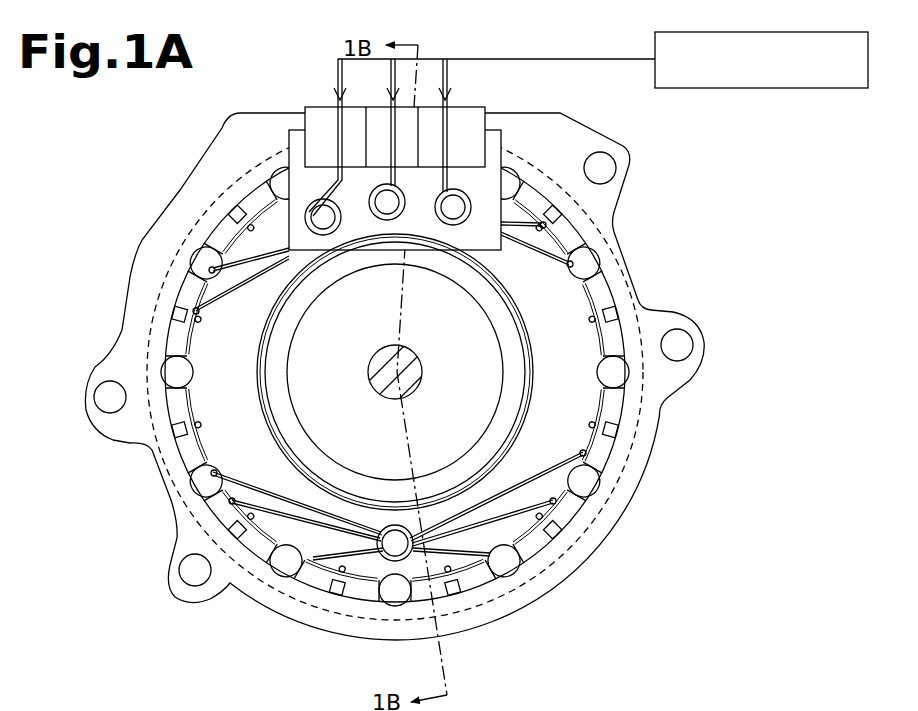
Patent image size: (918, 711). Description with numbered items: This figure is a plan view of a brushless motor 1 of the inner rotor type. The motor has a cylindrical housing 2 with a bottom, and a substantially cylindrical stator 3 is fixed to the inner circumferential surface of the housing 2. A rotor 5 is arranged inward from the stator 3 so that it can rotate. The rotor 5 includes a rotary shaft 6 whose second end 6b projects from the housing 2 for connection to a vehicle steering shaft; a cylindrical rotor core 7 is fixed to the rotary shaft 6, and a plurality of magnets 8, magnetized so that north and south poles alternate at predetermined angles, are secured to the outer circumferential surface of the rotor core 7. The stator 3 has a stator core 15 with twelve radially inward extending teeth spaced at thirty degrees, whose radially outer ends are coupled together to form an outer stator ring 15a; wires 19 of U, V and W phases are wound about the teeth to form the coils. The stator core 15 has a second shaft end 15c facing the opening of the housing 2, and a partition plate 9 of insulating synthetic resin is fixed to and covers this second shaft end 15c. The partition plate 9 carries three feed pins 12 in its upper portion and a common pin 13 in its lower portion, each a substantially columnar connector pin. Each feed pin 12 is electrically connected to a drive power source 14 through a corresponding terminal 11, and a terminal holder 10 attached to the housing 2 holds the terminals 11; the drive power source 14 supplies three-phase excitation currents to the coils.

The brushless motor 1 is at (645, 149).
The housing 2 is at (630, 497).
The stator 3 is at (433, 374).
The rotor 5 is at (525, 397).
The rotary shaft 6 is at (395, 355).
The second end 6b is at (380, 364).
The rotor core 7 is at (478, 335).
The magnets 8 is at (503, 363).
The partition plate 9 is at (575, 421).
The terminal holder 10 is at (502, 137).
The terminal 11 is at (447, 120).
The feed pins 12 is at (452, 198).
The common pin 13 is at (377, 540).
The drive power source 14 is at (792, 88).
The stator core 15 is at (592, 226).
The outer stator ring 15a is at (618, 330).
The second shaft end 15c is at (212, 222).
The wires 19 is at (230, 270).